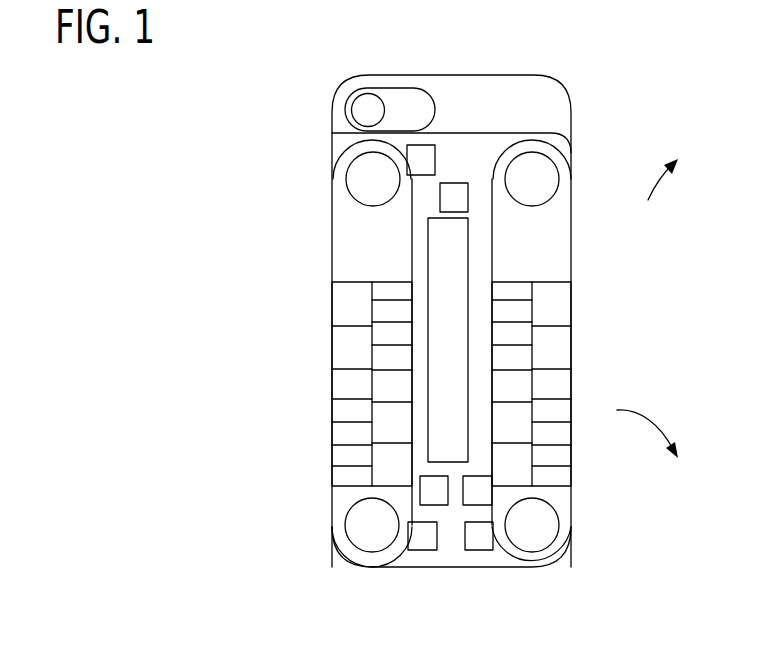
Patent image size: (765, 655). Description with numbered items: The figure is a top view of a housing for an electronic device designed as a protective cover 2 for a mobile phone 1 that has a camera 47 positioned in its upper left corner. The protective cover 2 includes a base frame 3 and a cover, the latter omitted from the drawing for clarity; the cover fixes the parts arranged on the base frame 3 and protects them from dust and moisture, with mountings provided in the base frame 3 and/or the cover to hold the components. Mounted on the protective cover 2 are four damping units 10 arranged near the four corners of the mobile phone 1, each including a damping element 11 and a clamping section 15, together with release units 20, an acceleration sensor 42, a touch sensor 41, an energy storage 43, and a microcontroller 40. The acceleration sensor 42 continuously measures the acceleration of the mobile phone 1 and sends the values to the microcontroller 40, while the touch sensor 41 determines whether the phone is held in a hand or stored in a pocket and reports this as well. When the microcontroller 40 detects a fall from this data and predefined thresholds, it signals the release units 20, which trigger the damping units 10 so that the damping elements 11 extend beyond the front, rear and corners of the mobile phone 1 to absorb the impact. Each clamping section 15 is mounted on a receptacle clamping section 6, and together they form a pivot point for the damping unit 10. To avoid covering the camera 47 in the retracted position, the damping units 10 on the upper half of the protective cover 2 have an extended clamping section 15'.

The mobile phone 1 is at (416, 101).
The protective cover 2 is at (584, 74).
The base frame 3 is at (557, 118).
The receptacle clamping section 6 is at (537, 177).
The damping unit 10 is at (312, 313).
The damping element 11 is at (392, 365).
The clamping section 15 is at (451, 573).
The extended clamping section 15' is at (453, 199).
The release unit 20 is at (420, 157).
The microcontroller 40 is at (460, 196).
The touch sensor 41 is at (442, 255).
The acceleration sensor 42 is at (485, 490).
The energy storage 43 is at (432, 492).
The camera 47 is at (369, 101).